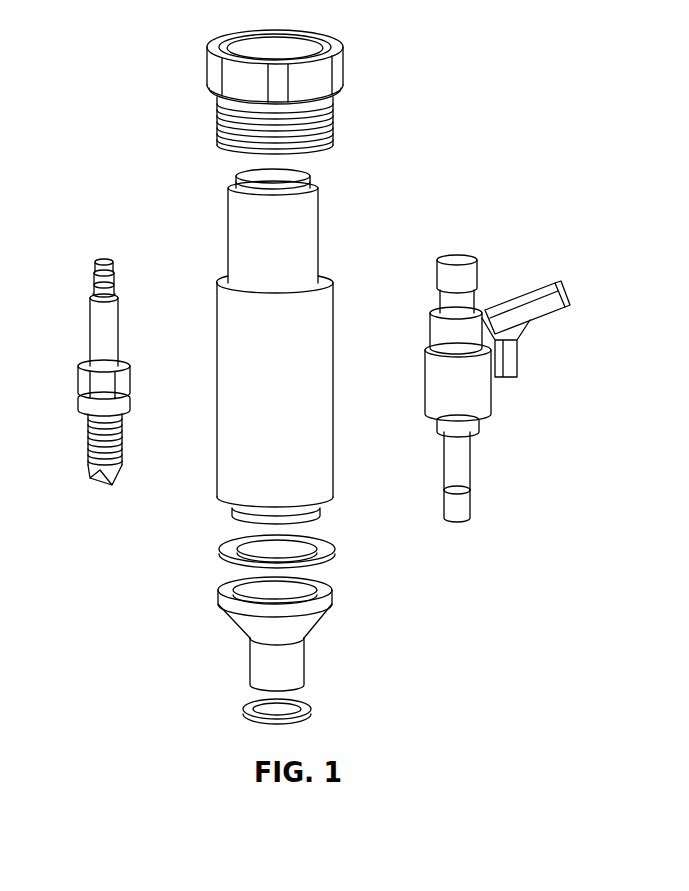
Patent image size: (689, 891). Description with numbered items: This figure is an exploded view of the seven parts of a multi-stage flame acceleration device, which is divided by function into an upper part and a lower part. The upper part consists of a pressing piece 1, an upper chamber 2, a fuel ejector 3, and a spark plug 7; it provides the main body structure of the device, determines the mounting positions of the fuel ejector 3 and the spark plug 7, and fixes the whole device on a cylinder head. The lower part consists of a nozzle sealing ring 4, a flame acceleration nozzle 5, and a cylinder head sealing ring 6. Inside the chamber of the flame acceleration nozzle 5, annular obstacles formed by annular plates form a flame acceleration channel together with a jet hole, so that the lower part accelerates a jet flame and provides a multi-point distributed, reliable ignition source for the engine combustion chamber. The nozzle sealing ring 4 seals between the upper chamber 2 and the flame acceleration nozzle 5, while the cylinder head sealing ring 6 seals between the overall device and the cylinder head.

The pressing piece 1 is at (332, 128).
The upper chamber 2 is at (310, 345).
The fuel ejector 3 is at (460, 282).
The nozzle sealing ring 4 is at (300, 557).
The flame acceleration nozzle 5 is at (290, 632).
The cylinder head sealing ring 6 is at (305, 706).
The spark plug 7 is at (103, 256).